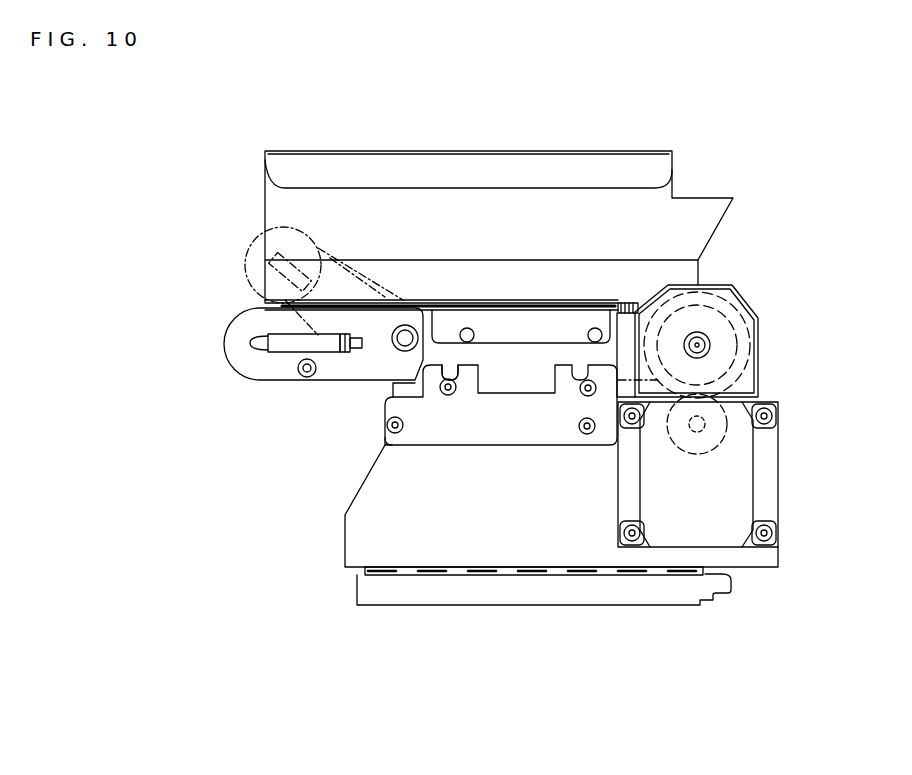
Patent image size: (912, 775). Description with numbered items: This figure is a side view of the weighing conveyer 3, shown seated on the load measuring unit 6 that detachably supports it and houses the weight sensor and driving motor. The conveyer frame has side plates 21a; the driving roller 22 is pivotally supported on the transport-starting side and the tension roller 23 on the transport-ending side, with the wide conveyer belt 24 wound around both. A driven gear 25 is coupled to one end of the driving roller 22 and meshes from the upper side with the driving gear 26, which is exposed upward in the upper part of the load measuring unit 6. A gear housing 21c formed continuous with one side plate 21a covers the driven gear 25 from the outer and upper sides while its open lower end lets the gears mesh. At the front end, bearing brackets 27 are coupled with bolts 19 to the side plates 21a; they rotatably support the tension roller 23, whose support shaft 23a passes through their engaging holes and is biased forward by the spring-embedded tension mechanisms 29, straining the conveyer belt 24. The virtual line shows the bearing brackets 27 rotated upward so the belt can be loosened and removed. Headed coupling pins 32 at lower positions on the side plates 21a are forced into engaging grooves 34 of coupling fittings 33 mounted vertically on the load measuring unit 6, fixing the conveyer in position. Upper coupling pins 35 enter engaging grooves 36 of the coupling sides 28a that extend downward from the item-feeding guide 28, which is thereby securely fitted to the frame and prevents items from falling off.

The weighing conveyer 3 is at (738, 240).
The load measuring unit 6 is at (363, 524).
The bolt 19 is at (401, 322).
The side plate 21a is at (497, 388).
The gear housing 21c is at (760, 368).
The driving roller 22 is at (625, 303).
The tension roller 23 is at (302, 350).
The support shaft 23a is at (262, 354).
The conveyer belt 24 is at (758, 322).
The driven gear 25 is at (742, 296).
The driving gear 26 is at (710, 448).
The bearing bracket 27 is at (353, 372).
The item-feeding guide 28 is at (265, 210).
The coupling side 28a is at (535, 346).
The tension mechanism 29 is at (325, 355).
The coupling pin 32 is at (447, 394).
The coupling fitting 33 is at (463, 444).
The engaging groove 34 is at (452, 368).
The coupling pin 35 is at (478, 335).
The engaging groove 36 is at (463, 327).